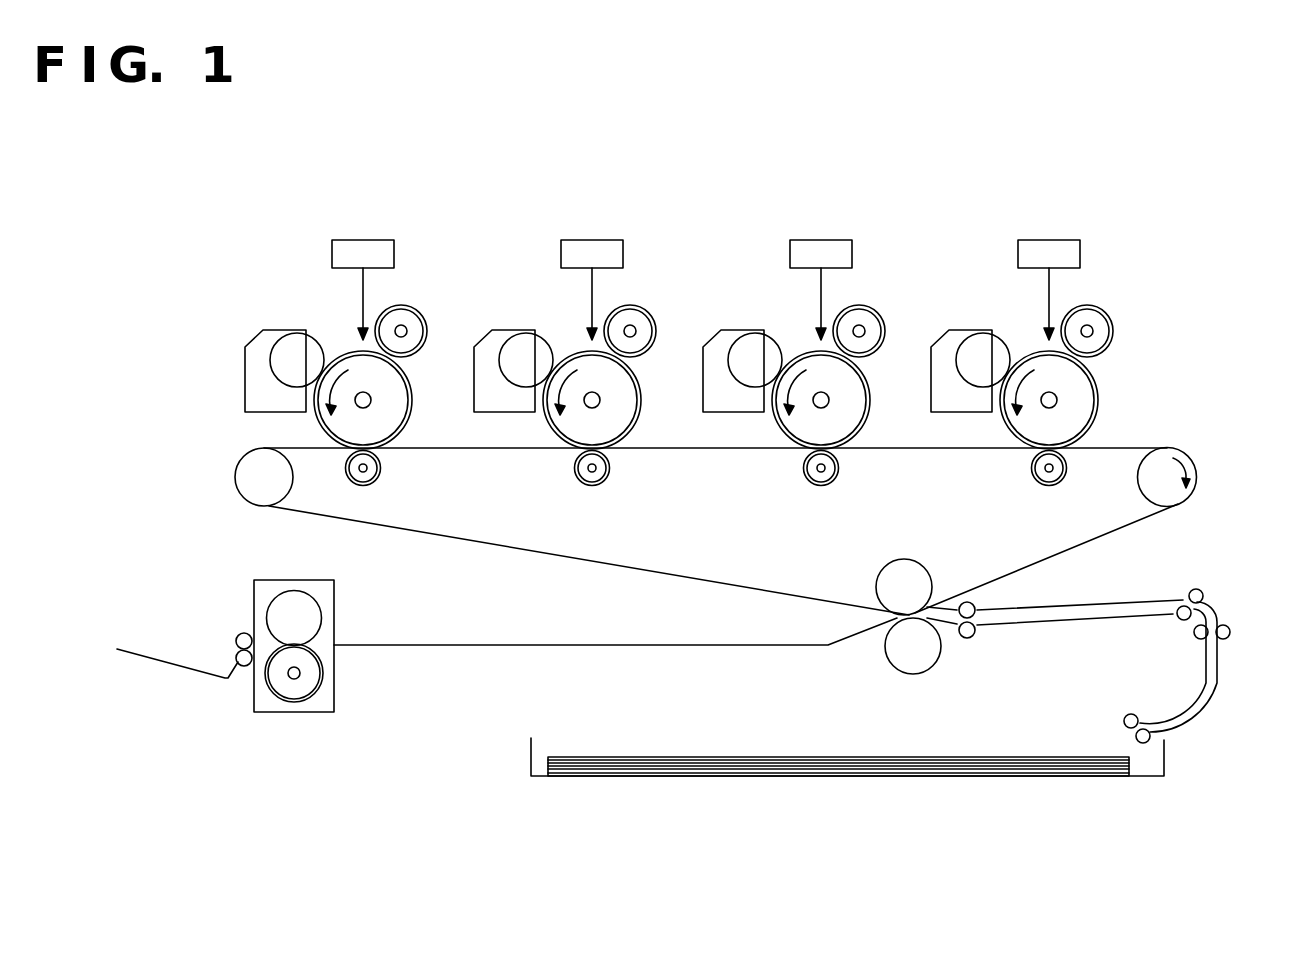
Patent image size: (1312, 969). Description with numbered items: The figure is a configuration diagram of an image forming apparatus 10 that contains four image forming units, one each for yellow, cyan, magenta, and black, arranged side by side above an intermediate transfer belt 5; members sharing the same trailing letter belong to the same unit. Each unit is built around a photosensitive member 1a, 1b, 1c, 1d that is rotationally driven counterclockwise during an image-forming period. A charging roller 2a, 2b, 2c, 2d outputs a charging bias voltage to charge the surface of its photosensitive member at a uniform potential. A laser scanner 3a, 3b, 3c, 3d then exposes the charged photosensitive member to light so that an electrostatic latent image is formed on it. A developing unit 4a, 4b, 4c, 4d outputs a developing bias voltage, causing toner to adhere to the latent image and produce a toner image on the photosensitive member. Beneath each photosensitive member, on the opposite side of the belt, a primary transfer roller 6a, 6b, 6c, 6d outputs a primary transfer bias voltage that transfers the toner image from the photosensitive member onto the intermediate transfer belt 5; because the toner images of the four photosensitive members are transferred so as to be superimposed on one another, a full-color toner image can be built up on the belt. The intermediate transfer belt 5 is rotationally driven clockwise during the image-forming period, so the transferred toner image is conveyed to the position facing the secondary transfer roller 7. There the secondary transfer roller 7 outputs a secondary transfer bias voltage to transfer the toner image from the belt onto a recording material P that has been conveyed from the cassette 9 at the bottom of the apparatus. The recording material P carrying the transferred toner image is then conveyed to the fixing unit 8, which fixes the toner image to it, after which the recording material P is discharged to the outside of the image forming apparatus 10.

The photosensitive member 1a is at (413, 380).
The photosensitive member 1b is at (642, 380).
The photosensitive member 1c is at (871, 380).
The photosensitive member 1d is at (1099, 380).
The charging roller 2a is at (425, 317).
The charging roller 2b is at (654, 317).
The charging roller 2c is at (883, 317).
The charging roller 2d is at (1111, 317).
The laser scanner 3a is at (377, 240).
The laser scanner 3b is at (606, 240).
The laser scanner 3c is at (835, 240).
The laser scanner 3d is at (1063, 240).
The developing unit 4a is at (283, 330).
The developing unit 4b is at (512, 330).
The developing unit 4c is at (741, 330).
The developing unit 4d is at (969, 330).
The intermediate transfer belt 5 is at (1067, 549).
The primary transfer roller 6a is at (381, 468).
The primary transfer roller 6b is at (610, 468).
The primary transfer roller 6c is at (839, 468).
The primary transfer roller 6d is at (1067, 468).
The secondary transfer roller 7 is at (888, 660).
The fixing unit 8 is at (334, 588).
The cassette 9 is at (531, 751).
The image forming apparatus 10 is at (1244, 256).
The recording material P is at (1041, 755).